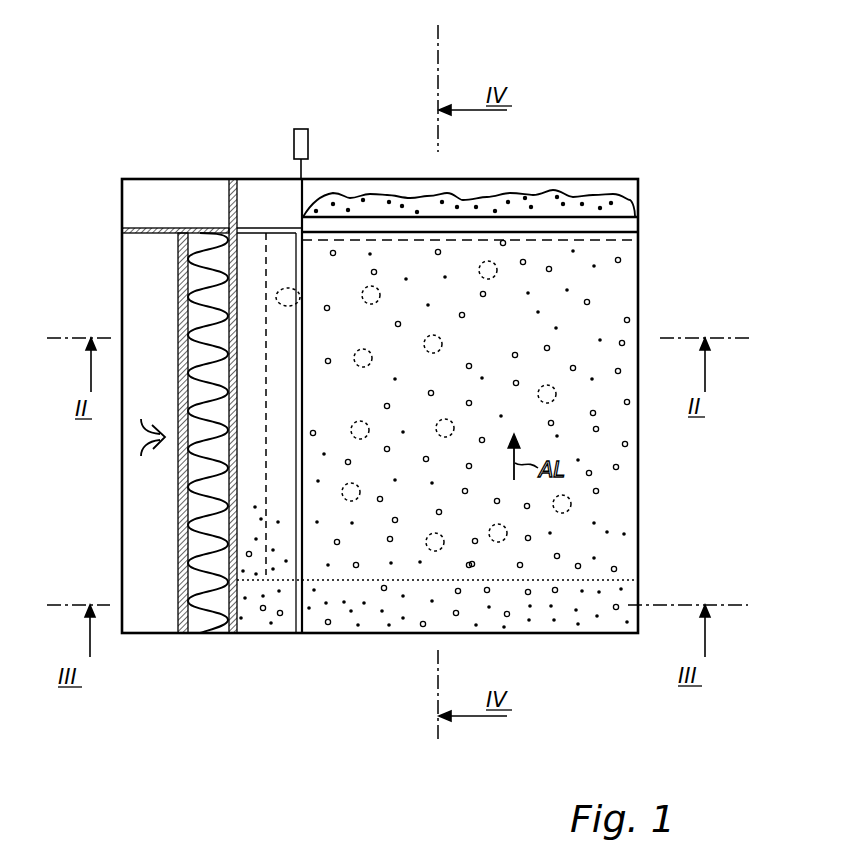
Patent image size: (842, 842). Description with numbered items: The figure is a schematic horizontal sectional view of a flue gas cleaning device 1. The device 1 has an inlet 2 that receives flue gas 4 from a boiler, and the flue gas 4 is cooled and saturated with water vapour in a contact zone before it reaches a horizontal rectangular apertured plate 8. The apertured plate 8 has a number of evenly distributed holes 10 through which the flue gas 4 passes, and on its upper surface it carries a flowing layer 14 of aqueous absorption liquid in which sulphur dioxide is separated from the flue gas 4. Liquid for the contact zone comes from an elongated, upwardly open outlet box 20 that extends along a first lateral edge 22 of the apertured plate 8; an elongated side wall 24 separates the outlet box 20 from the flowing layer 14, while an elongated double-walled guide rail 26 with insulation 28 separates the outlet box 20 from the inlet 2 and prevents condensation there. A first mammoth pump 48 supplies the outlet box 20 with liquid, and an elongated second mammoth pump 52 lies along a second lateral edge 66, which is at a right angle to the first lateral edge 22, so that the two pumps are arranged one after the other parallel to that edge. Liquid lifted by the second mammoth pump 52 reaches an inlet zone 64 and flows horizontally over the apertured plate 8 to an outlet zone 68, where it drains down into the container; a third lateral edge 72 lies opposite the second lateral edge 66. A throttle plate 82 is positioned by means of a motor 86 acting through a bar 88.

The device 1 is at (336, 102).
The inlet 2 is at (122, 290).
The flue gas 4 is at (140, 444).
The apertured plate 8 is at (620, 507).
The holes 10 is at (442, 343).
The flowing layer 14 is at (598, 293).
The outlet box 20 is at (304, 343).
The first lateral edge 22 is at (300, 290).
The side wall 24 is at (297, 393).
The double-walled guide rail 26 is at (180, 388).
The insulation 28 is at (198, 348).
The first mammoth pump 48 is at (260, 640).
The second mammoth pump 52 is at (388, 645).
The inlet zone 64 is at (588, 618).
The second lateral edge 66 is at (632, 592).
The outlet zone 68 is at (551, 192).
The third lateral edge 72 is at (604, 228).
The throttle plate 82 is at (370, 226).
The motor 86 is at (293, 132).
The bar 88 is at (300, 192).